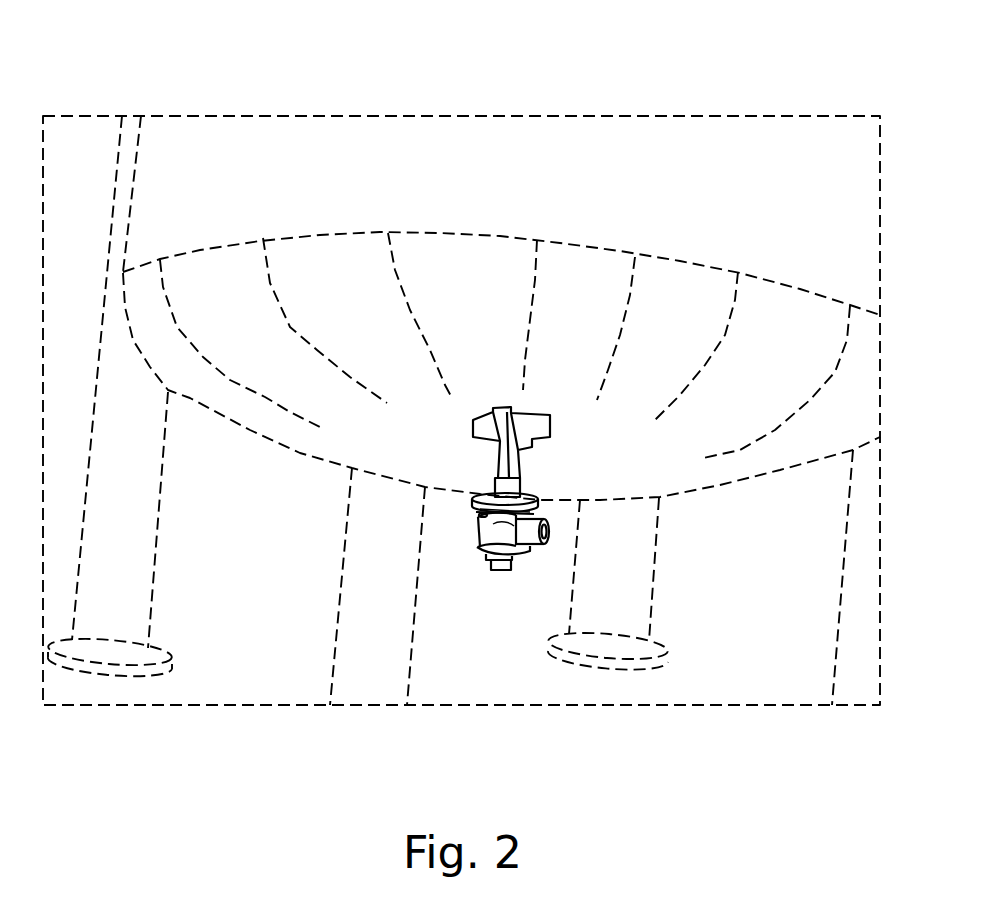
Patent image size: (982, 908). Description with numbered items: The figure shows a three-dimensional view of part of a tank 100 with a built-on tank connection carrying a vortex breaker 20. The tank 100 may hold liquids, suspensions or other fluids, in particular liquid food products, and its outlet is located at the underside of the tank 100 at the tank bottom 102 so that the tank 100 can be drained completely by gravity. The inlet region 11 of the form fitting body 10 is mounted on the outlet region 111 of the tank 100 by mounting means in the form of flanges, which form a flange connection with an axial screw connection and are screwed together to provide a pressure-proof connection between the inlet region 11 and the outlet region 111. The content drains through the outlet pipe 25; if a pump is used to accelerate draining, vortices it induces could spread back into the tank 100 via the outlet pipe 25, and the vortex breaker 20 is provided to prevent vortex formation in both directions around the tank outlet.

The tank 100 is at (260, 153).
The tank bottom 102 is at (489, 260).
The form fitting body 10 is at (493, 533).
The inlet region 11 is at (475, 498).
The outlet region 111 is at (482, 497).
The vortex breaker 20 is at (548, 432).
The outlet pipe 25 is at (548, 530).